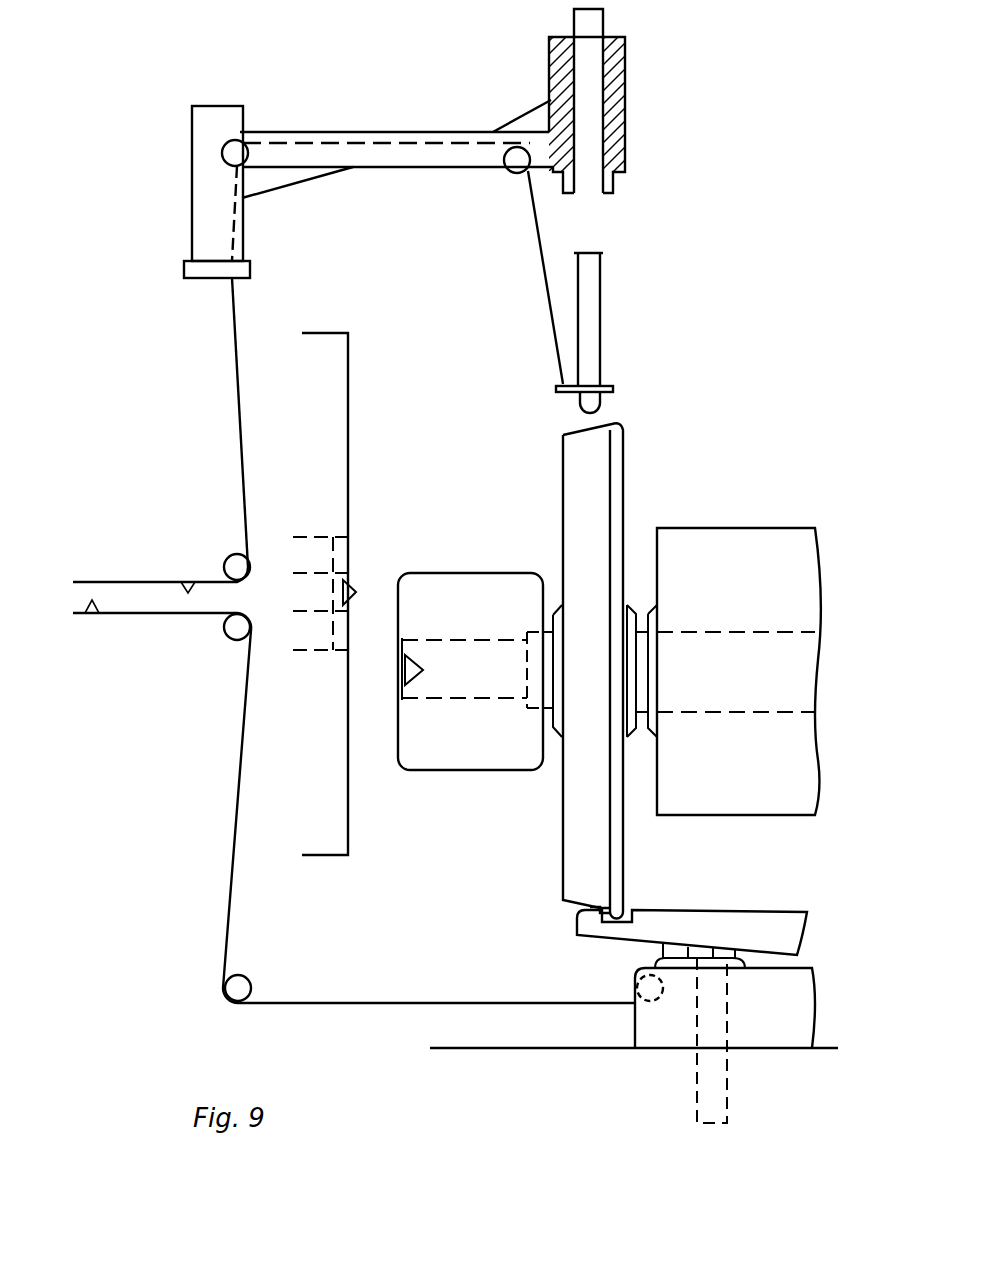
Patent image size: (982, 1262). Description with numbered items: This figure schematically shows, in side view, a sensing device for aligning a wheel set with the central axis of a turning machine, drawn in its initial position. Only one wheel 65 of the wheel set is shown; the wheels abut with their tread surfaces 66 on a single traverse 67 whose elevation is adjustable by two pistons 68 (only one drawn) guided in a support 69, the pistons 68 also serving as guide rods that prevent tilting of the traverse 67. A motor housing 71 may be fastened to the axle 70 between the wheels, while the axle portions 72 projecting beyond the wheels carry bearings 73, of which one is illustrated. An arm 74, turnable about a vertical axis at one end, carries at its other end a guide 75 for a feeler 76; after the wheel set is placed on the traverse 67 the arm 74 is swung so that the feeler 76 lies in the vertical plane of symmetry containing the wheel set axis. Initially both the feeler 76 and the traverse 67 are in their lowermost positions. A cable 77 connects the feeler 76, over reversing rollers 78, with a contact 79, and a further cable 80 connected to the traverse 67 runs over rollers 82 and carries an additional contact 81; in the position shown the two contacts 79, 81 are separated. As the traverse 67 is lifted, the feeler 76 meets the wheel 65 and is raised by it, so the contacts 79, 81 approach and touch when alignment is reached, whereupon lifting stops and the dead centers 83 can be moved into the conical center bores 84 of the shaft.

The wheel 65 is at (585, 810).
The tread surface 66 is at (578, 912).
The traverse 67 is at (693, 922).
The piston 68 is at (705, 1065).
The support 69 is at (673, 1027).
The axle 70 is at (772, 663).
The motor housing 71 is at (685, 560).
The axle portion 72 is at (480, 683).
The bearing 73 is at (457, 602).
The arm 74 is at (412, 148).
The guide 75 is at (615, 155).
The feeler 76 is at (592, 310).
The cable 77 is at (563, 303).
The reversing roller 78 is at (242, 170).
The contact 79 is at (187, 582).
The cable 80 is at (380, 1000).
The contact 81 is at (100, 610).
The roller 82 is at (238, 985).
The dead center 83 is at (345, 578).
The conical center bore 84 is at (417, 680).